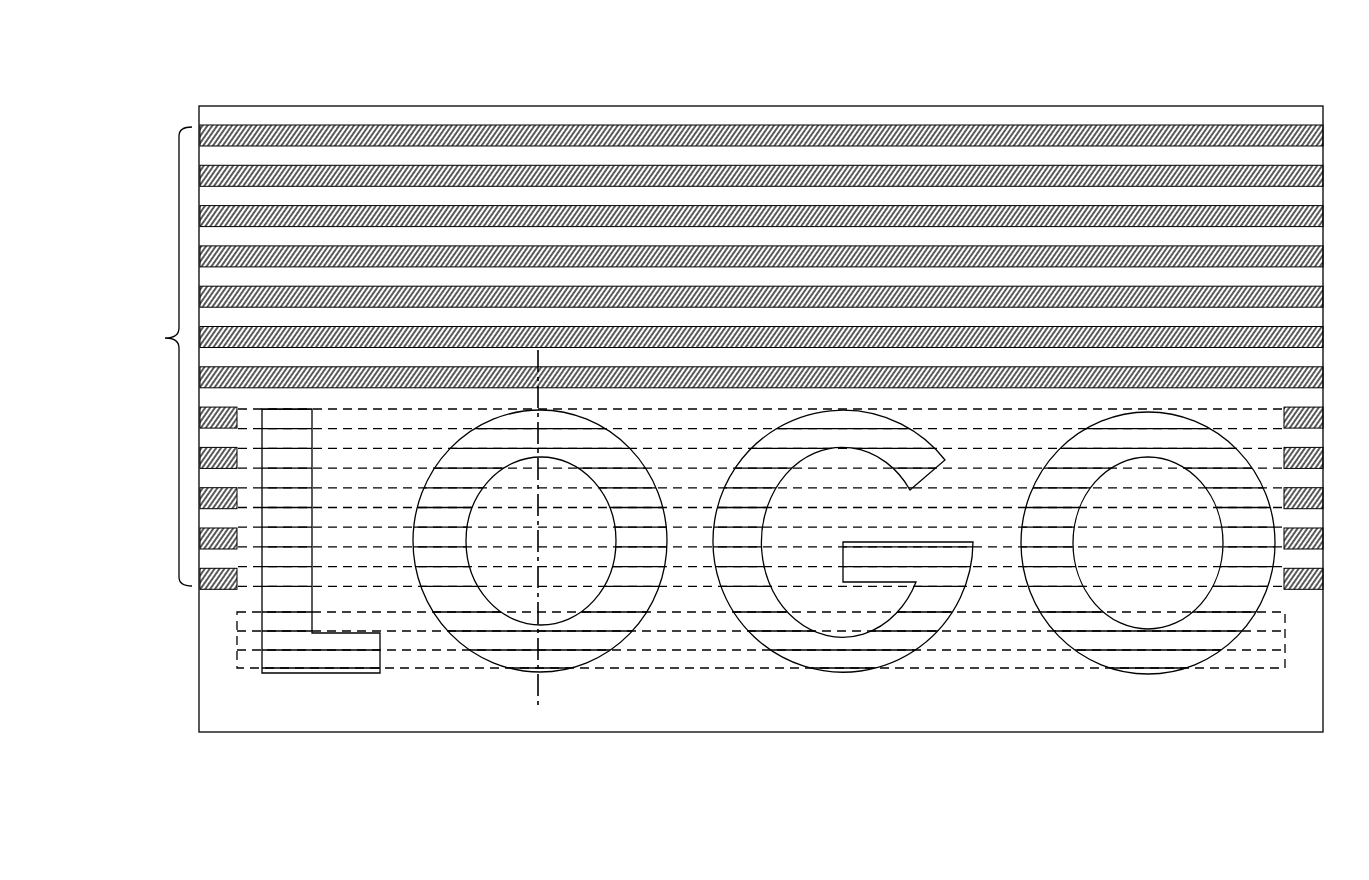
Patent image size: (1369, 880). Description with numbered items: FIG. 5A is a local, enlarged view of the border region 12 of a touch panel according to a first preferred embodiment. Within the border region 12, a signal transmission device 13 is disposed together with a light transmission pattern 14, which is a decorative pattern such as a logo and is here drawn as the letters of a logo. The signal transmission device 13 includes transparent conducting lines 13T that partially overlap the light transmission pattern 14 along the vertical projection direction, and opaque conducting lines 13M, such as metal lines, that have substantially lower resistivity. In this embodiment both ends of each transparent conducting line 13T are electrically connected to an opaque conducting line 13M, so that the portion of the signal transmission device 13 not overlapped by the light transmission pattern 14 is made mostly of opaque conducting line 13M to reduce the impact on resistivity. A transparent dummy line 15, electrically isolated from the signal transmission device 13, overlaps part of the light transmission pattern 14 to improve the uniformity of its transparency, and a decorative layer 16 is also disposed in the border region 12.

The border region 12 is at (405, 91).
The signal transmission device 13 is at (165, 338).
The opaque conducting line 13M is at (217, 137).
The transparent conducting line 13T is at (1260, 415).
The light transmission pattern 14 is at (287, 640).
The transparent dummy line 15 is at (410, 663).
The decorative layer 16 is at (1230, 713).